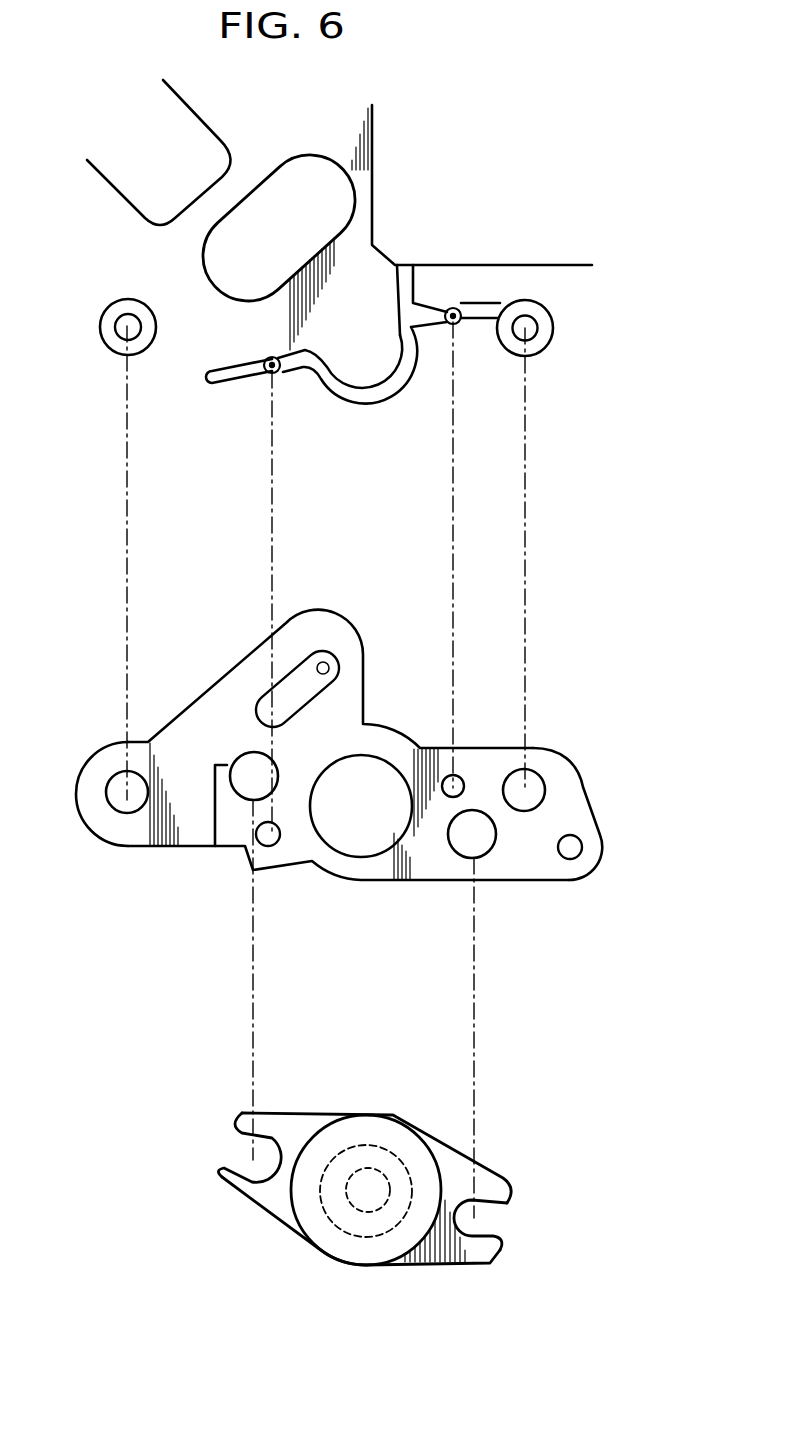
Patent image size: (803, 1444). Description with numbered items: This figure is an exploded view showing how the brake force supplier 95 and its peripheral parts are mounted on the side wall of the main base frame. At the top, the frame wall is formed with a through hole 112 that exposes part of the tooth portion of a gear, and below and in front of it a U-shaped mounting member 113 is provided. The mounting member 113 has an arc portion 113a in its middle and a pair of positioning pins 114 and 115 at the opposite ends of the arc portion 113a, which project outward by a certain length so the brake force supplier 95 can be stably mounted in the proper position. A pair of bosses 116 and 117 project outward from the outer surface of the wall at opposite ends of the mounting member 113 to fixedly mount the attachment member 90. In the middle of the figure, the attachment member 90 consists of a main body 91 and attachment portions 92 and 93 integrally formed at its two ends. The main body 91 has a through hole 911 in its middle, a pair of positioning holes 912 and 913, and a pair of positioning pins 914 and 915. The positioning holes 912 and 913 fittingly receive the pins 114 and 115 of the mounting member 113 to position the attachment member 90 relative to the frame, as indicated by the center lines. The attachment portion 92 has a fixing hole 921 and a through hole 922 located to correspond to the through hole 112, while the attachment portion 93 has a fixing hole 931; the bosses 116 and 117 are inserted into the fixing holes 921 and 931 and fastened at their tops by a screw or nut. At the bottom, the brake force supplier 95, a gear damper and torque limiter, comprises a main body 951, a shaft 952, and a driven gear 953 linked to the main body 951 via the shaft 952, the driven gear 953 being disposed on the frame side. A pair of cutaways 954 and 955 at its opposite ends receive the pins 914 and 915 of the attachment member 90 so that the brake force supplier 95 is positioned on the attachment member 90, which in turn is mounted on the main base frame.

The through hole 112 is at (272, 175).
The mounting member 113 is at (378, 395).
The arc portion 113a is at (322, 388).
The positioning pin 114 is at (263, 372).
The positioning pin 115 is at (457, 324).
The boss 116 is at (108, 340).
The boss 117 is at (543, 345).
The attachment member 90 is at (188, 846).
The main body 91 is at (380, 870).
The attachment portion 92 is at (115, 762).
The attachment portion 93 is at (563, 803).
The through hole 911 is at (370, 762).
The positioning hole 912 is at (265, 840).
The positioning hole 913 is at (458, 780).
The positioning pin 914 is at (243, 772).
The positioning pin 915 is at (478, 848).
The fixing hole 921 is at (127, 807).
The through hole 922 is at (335, 667).
The fixing hole 931 is at (533, 785).
The brake force supplier 95 is at (306, 1240).
The main body 951 is at (373, 1250).
The shaft 952 is at (353, 1188).
The driven gear 953 is at (368, 1143).
The cutaway 954 is at (240, 1140).
The cutaway 955 is at (497, 1236).